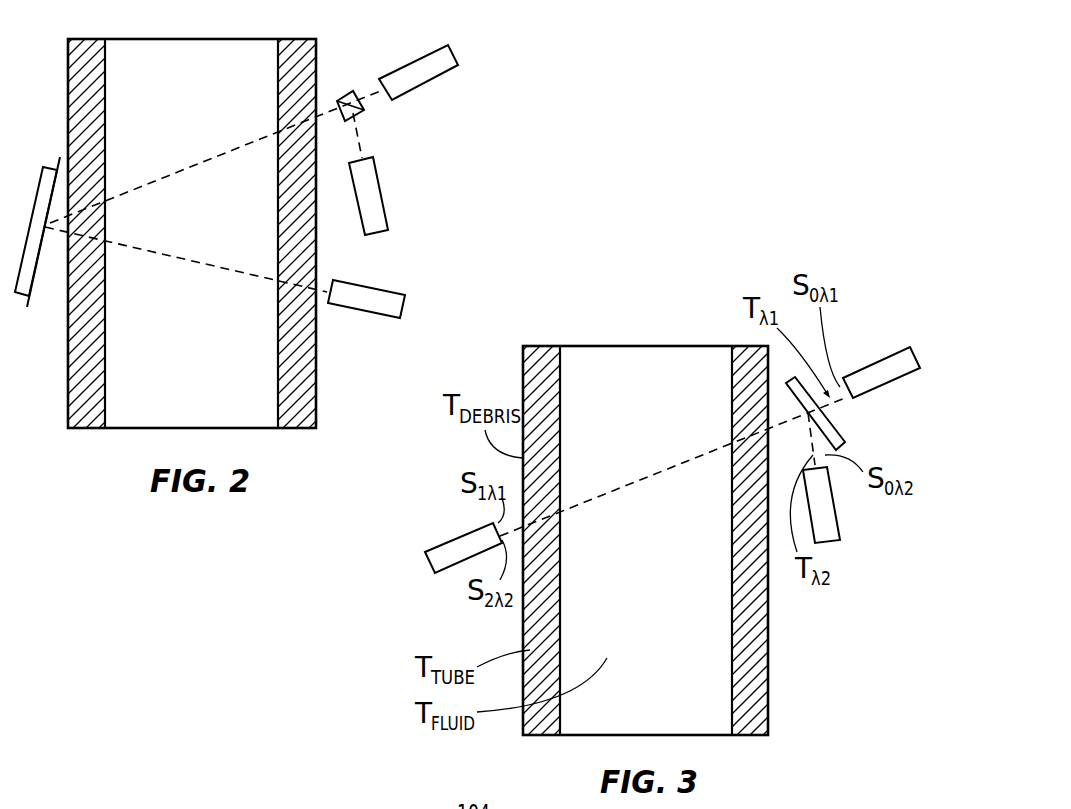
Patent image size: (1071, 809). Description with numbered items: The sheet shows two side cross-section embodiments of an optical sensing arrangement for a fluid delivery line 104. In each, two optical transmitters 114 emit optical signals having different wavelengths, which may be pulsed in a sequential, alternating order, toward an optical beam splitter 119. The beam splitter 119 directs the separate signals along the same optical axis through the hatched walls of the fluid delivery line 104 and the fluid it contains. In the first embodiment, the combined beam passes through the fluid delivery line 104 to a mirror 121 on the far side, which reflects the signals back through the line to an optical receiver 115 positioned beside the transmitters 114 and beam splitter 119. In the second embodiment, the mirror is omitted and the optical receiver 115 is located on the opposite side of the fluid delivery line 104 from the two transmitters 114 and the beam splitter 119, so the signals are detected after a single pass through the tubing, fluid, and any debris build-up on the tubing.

In FIG. 2, the fluid delivery line 104 is at (320, 62).
In FIG. 3, the fluid delivery line 104 is at (775, 629).
In FIG. 2, the optical transmitter 114 is at (443, 78).
In FIG. 3, the optical transmitter 114 is at (877, 362).
In FIG. 2, the optical receiver 115 is at (380, 288).
In FIG. 3, the optical receiver 115 is at (453, 568).
In FIG. 2, the optical beam splitter 119 is at (367, 105).
In FIG. 3, the optical beam splitter 119 is at (842, 433).
In FIG. 2, the mirror 121 is at (45, 185).